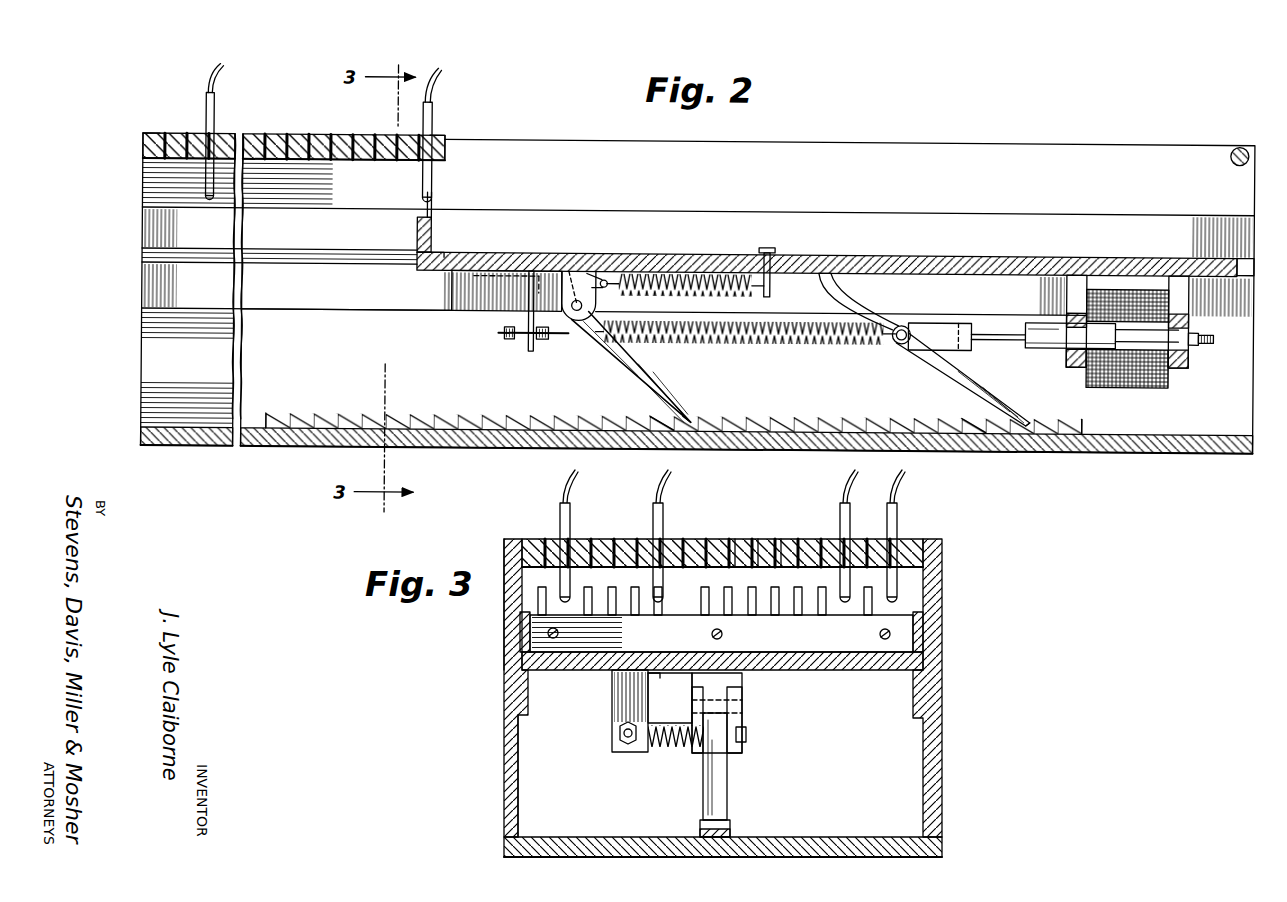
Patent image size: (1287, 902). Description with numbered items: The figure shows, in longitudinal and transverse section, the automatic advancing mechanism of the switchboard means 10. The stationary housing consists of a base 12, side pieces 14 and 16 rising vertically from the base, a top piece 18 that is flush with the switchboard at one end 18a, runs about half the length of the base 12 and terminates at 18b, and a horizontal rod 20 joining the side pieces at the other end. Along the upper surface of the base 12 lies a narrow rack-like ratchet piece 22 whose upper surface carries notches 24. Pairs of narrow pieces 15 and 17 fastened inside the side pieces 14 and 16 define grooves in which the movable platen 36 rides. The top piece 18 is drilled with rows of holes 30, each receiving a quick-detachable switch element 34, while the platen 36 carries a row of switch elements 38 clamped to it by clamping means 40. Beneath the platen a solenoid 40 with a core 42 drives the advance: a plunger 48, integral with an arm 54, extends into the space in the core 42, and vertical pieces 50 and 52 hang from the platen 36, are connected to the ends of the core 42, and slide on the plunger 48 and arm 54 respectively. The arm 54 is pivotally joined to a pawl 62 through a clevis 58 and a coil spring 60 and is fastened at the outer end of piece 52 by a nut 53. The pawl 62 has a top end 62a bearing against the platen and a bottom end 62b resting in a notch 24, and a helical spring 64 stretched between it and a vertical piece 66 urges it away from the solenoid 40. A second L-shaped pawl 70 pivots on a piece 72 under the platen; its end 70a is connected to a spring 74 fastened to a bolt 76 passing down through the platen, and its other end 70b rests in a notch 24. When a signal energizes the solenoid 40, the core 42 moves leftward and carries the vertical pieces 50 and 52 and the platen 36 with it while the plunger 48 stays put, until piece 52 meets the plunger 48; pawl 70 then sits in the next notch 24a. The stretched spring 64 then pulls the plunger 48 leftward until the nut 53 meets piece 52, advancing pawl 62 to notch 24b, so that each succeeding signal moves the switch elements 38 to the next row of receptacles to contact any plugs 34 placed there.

In FIG. 2, the switchboard means 10 is at (140, 290).
In FIG. 2, the base 12 is at (1238, 440).
In FIG. 3, the base 12 is at (905, 850).
In FIG. 2, the side piece 14 is at (342, 358).
In FIG. 3, the side piece 14 is at (504, 762).
In FIG. 3, the narrow pieces 15 is at (520, 626).
In FIG. 3, the side piece 16 is at (935, 793).
In FIG. 3, the narrow pieces 17 is at (922, 636).
In FIG. 2, the top piece 18 is at (320, 132).
In FIG. 3, the top piece 18 is at (918, 542).
In FIG. 2, the end of top piece 18a is at (141, 147).
In FIG. 2, the end of top piece 18b is at (447, 139).
In FIG. 2, the horizontal rod 20 is at (1237, 140).
In FIG. 2, the ratchet piece 22 is at (1043, 432).
In FIG. 3, the ratchet piece 22 is at (732, 824).
In FIG. 2, the notches 24 is at (784, 420).
In FIG. 2, the notch 24a is at (678, 413).
In FIG. 2, the notch 24b is at (1000, 420).
In FIG. 3, the holes 30 is at (780, 538).
In FIG. 2, the switch element 34 is at (215, 118).
In FIG. 3, the switch element 34 is at (896, 525).
In FIG. 2, the movable platen 36 is at (935, 260).
In FIG. 3, the movable platen 36 is at (920, 662).
In FIG. 2, the switch elements 38 is at (434, 200).
In FIG. 3, the switch elements 38 is at (636, 586).
In FIG. 2, the solenoid 40 is at (434, 228).
In FIG. 3, the solenoid 40 is at (900, 627).
In FIG. 2, the core 42 is at (1131, 280).
In FIG. 2, the plunger 48 is at (1050, 343).
In FIG. 2, the vertical piece 50 is at (1075, 290).
In FIG. 2, the vertical piece 52 is at (1180, 280).
In FIG. 2, the nut 53 is at (1198, 345).
In FIG. 2, the arm 54 is at (990, 327).
In FIG. 2, the clevis 58 is at (940, 316).
In FIG. 3, the clevis 58 is at (748, 734).
In FIG. 2, the coil spring 60 is at (894, 338).
In FIG. 2, the pawl 62 is at (938, 362).
In FIG. 2, the top end of pawl 62a is at (838, 265).
In FIG. 2, the bottom end of pawl 62b is at (1032, 414).
In FIG. 2, the helical spring 64 is at (820, 345).
In FIG. 3, the helical spring 64 is at (666, 748).
In FIG. 2, the vertical piece 66 is at (530, 306).
In FIG. 3, the vertical piece 66 is at (612, 697).
In FIG. 2, the second pawl 70 is at (620, 348).
In FIG. 3, the second pawl 70 is at (727, 792).
In FIG. 2, the end of second pawl 70a is at (608, 275).
In FIG. 2, the end of second pawl 70b is at (693, 412).
In FIG. 2, the piece 72 is at (574, 266).
In FIG. 3, the piece 72 is at (746, 698).
In FIG. 2, the spring 74 is at (706, 268).
In FIG. 2, the bolt 76 is at (776, 258).